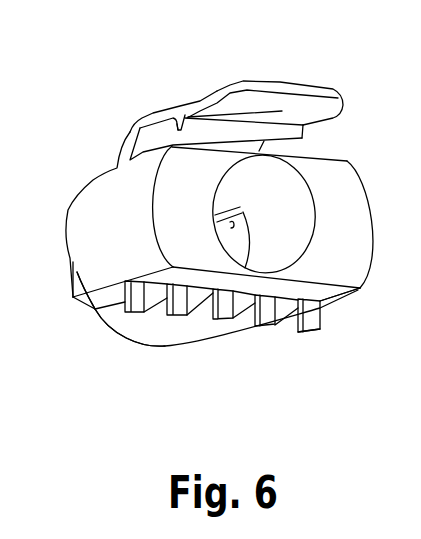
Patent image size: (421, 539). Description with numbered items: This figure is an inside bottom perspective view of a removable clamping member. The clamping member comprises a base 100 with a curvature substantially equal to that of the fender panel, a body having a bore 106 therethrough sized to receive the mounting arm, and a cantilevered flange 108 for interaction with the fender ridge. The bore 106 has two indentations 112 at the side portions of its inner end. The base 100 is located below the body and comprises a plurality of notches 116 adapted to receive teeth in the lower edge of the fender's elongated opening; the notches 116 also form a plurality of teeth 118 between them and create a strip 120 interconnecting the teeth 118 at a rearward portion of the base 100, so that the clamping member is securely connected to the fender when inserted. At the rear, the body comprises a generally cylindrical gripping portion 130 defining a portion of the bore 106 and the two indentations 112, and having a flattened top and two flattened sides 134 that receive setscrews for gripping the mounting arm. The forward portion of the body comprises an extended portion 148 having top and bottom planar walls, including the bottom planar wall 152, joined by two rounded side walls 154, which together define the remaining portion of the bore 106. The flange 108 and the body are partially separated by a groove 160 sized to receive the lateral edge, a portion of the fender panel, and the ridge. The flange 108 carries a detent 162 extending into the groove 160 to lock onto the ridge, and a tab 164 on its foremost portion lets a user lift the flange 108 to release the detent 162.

The base 100 is at (155, 342).
The bore 106 is at (291, 230).
The cantilevered flange 108 is at (157, 112).
The indentations 112 is at (243, 212).
The notches 116 is at (197, 315).
The teeth 118 is at (259, 334).
The strip 120 is at (128, 338).
The gripping portion 130 is at (77, 310).
The flattened sides 134 is at (72, 288).
The extended portion 148 is at (340, 299).
The bottom planar wall 152 is at (293, 314).
The rounded side walls 154 is at (97, 200).
The groove 160 is at (146, 137).
The detent 162 is at (300, 137).
The tab 164 is at (310, 91).